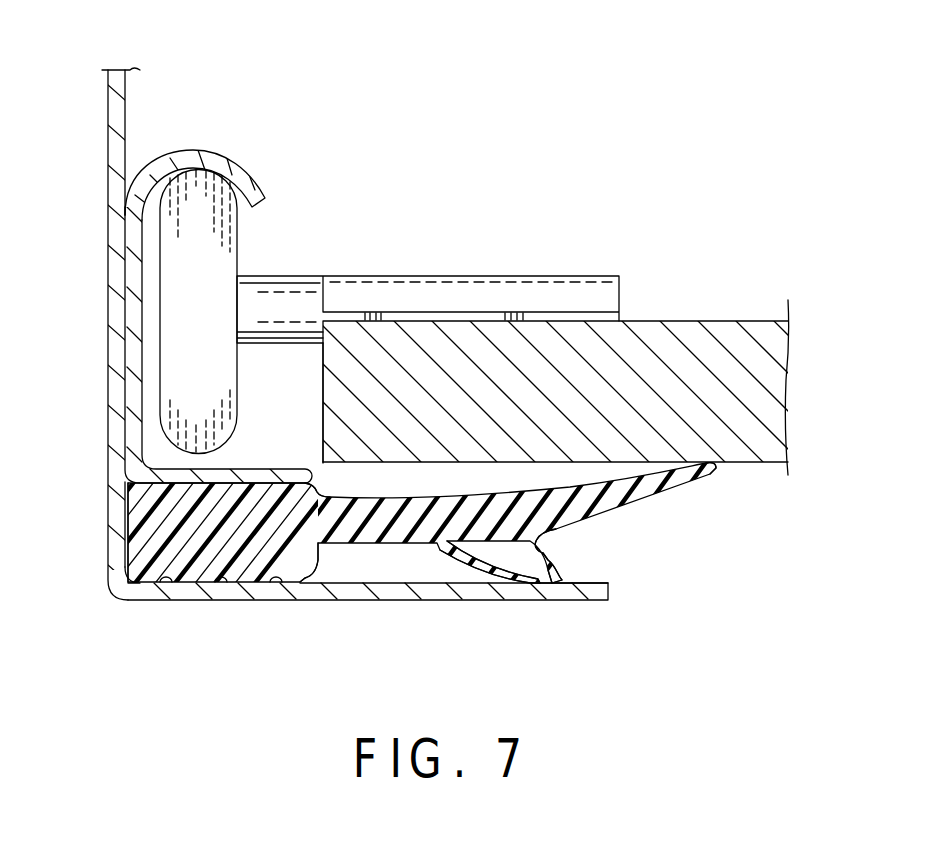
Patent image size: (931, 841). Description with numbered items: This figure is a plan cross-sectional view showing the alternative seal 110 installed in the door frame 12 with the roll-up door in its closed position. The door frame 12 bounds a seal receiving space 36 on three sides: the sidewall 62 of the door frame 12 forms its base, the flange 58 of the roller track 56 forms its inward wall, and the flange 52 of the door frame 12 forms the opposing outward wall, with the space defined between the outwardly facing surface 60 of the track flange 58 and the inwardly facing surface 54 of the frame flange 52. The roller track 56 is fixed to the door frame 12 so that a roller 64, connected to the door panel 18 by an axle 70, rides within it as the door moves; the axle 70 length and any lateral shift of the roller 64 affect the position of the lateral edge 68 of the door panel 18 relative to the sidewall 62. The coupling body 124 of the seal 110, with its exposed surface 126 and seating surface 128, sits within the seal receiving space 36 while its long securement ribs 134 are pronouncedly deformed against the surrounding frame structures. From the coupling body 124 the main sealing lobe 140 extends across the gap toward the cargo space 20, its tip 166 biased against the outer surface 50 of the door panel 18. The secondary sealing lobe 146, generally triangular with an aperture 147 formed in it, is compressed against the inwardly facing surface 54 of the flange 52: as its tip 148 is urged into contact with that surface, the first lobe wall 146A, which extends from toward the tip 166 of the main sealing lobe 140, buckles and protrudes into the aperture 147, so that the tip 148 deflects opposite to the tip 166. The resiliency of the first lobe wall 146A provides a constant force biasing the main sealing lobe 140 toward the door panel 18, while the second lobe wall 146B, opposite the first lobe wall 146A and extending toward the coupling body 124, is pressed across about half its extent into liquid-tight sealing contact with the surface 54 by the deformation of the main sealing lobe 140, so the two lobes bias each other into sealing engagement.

The door frame 12 is at (367, 361).
The door panel 18 is at (540, 375).
The cargo space 20 is at (540, 313).
The seal receiving space 36 is at (130, 592).
The outer surface 50 is at (752, 464).
The flange 52 is at (548, 592).
The inwardly facing surface 54 is at (370, 608).
The roller track 56 is at (239, 162).
The flange of roller track 58 is at (218, 294).
The outwardly facing surface 60 is at (310, 496).
The sidewall 62 is at (108, 283).
The roller 64 is at (224, 243).
The lateral edge 68 is at (323, 388).
The axle 70 is at (292, 277).
The seal 110 is at (730, 563).
The coupling body 124 is at (138, 530).
The exposed surface 126 is at (320, 560).
The seating surface 128 is at (127, 572).
The securement rib 134 is at (300, 565).
The main sealing lobe 140 is at (382, 554).
The secondary sealing lobe 146 is at (545, 578).
The first lobe wall 146A is at (562, 536).
The second lobe wall 146B is at (478, 565).
The aperture 147 is at (512, 556).
The tip of secondary sealing lobe 148 is at (585, 570).
The tip of main sealing lobe 166 is at (712, 470).